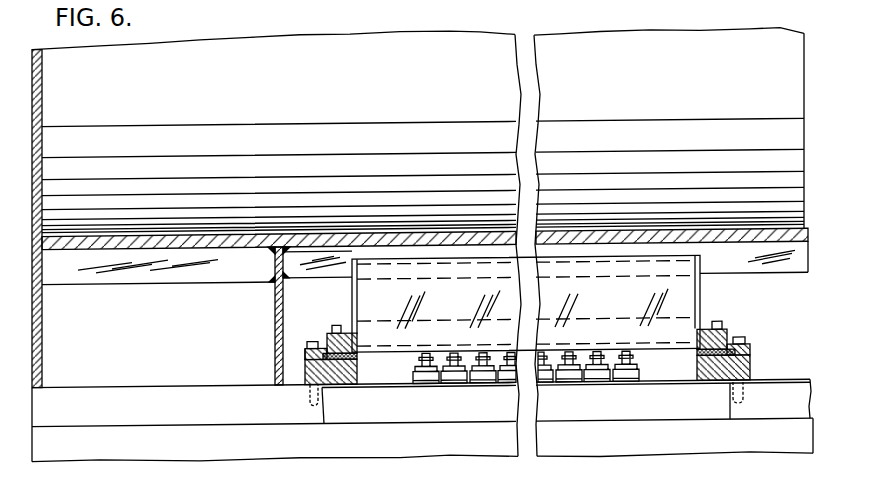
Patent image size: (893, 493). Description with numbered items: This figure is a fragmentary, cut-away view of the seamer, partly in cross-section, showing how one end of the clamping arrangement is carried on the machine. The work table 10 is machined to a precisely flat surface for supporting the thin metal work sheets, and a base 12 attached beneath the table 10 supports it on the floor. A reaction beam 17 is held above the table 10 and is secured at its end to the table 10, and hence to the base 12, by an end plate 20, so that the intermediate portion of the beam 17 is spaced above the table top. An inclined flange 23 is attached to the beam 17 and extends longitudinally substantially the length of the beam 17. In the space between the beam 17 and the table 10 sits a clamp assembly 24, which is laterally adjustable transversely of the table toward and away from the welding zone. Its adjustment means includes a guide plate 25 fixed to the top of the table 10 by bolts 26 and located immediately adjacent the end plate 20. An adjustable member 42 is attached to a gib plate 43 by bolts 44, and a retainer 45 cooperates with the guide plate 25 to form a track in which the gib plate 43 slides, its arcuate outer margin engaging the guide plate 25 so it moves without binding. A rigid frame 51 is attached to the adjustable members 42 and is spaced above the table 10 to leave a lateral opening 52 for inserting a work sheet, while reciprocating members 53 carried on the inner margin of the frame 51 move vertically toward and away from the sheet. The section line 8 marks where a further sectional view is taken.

The section line 8- 8 is at (673, 492).
The work table 10 is at (162, 418).
The base 12 is at (64, 449).
The reaction beam 17 is at (214, 48).
The end plate 20 is at (42, 343).
The inclined flange 23 is at (134, 280).
The clamp assembly 24 is at (708, 296).
The guide plate 25 is at (305, 379).
The bolt 26 is at (311, 345).
The adjustable member 42 is at (328, 352).
The gib plate 43 is at (357, 362).
The bolt 44 is at (336, 329).
The retainer 45 is at (305, 357).
The rigid frame 51 is at (617, 313).
The lateral opening 52 is at (663, 382).
The reciprocating member 53 is at (443, 389).